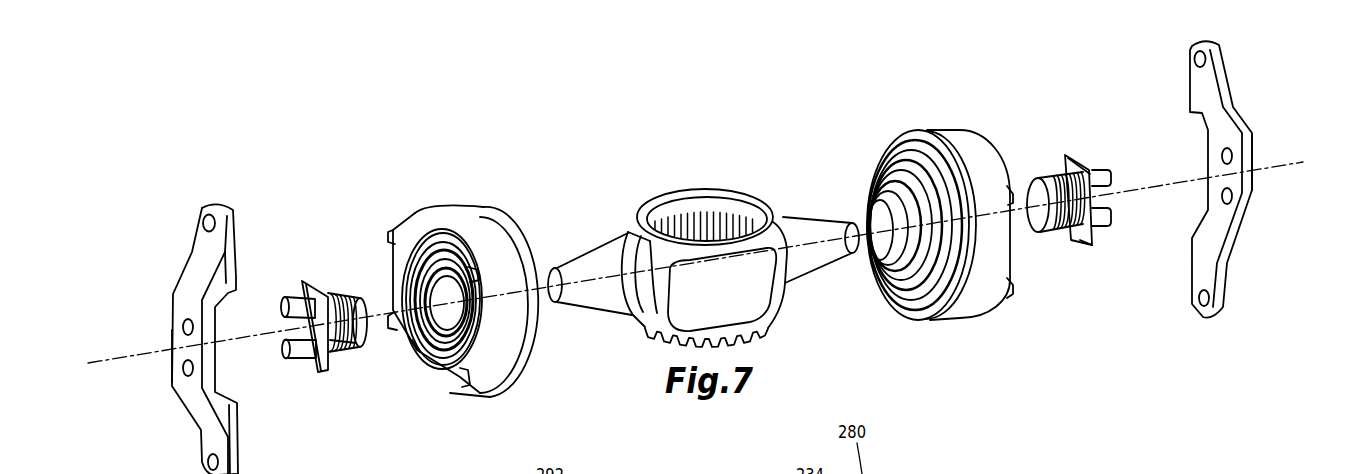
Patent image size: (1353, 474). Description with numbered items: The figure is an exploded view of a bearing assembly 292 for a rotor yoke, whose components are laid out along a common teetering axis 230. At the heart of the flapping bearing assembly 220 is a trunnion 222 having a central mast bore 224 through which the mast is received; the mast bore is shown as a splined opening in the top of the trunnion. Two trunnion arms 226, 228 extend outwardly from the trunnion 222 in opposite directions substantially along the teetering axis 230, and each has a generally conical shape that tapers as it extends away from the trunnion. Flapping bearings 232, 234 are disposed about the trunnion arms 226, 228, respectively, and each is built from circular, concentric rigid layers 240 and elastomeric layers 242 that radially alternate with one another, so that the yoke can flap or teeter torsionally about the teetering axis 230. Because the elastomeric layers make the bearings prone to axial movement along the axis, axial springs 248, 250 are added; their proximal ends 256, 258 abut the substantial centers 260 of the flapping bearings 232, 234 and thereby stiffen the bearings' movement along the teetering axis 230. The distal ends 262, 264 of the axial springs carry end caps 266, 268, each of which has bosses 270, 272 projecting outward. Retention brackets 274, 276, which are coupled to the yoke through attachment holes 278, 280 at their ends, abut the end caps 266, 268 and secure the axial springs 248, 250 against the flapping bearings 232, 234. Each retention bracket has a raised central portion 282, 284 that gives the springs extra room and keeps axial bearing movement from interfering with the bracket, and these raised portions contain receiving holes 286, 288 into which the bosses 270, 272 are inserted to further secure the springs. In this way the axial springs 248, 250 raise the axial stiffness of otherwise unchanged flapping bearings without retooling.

The flapping bearing assembly 220 is at (677, 184).
The trunnion 222 is at (727, 190).
The central mast bore 224 is at (663, 205).
The trunnion arm 226 is at (610, 300).
The trunnion arm 228 is at (818, 263).
The teetering axis 230 is at (1145, 187).
The flapping bearing 232 is at (460, 210).
The flapping bearing 234 is at (935, 133).
The rigid layers 240 is at (433, 353).
The elastomeric layers 242 is at (450, 350).
The axial spring 248 is at (333, 294).
The axial spring 250 is at (1073, 177).
The proximal end 256 is at (365, 313).
The proximal end 258 is at (1033, 197).
The center 260 is at (412, 340).
The distal end 262 is at (333, 353).
The distal end 264 is at (1068, 153).
The end cap 266 is at (303, 280).
The end cap 268 is at (1087, 247).
The bosses 270 is at (287, 352).
The bosses 272 is at (1100, 172).
The retention bracket 274 is at (195, 425).
The retention bracket 276 is at (1240, 250).
The attachment holes 278 is at (207, 221).
The attachment holes 280 is at (1198, 60).
The raised central portion 282 is at (172, 380).
The raised central portion 284 is at (1253, 143).
The receiving holes 286 is at (184, 327).
The receiving holes 288 is at (1228, 197).
The bearing assembly 292 is at (547, 366).